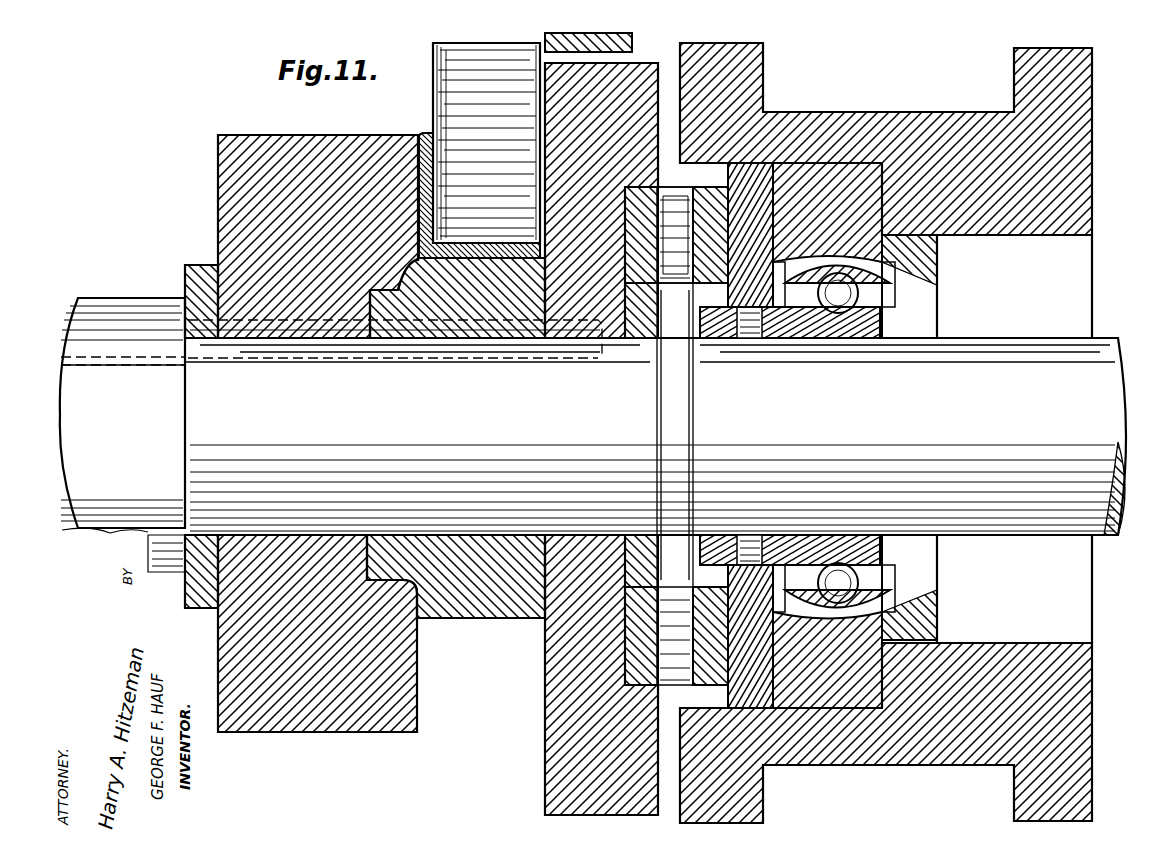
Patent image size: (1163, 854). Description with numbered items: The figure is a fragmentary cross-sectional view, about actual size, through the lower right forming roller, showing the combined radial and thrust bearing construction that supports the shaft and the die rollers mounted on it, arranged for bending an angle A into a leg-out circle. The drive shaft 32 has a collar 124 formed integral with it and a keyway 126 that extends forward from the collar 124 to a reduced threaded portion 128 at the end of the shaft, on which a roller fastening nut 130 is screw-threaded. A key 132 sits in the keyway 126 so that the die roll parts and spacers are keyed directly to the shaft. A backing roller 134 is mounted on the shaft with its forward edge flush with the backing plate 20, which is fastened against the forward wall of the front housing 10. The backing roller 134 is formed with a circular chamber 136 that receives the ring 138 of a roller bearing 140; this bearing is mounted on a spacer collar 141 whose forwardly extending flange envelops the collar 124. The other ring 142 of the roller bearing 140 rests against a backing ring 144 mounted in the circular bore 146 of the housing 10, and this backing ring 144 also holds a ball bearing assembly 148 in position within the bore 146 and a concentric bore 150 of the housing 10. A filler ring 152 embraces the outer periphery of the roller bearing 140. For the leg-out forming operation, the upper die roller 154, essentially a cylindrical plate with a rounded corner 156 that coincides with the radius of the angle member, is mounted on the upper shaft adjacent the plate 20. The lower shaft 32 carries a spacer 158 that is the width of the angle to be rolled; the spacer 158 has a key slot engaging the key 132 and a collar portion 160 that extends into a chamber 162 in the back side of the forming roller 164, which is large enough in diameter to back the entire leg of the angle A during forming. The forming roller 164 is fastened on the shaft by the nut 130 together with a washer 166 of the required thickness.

The front frame or housing 10 is at (1022, 623).
The backing plate 20 is at (545, 41).
The drive shaft 32 is at (1022, 333).
The collar 124 is at (688, 411).
The keyway 126 is at (487, 362).
The reduced threaded portion 128 is at (128, 368).
The roller fastening nut 130 is at (126, 300).
The key 132 is at (318, 350).
The backing roller 134 is at (640, 76).
The circular chamber 136 is at (635, 190).
The ring 138 is at (630, 244).
The roller bearing 140 is at (665, 265).
The spacer collar 141 is at (625, 306).
The other ring 142 is at (828, 230).
The backing ring 144 is at (755, 225).
The circular bore 146 is at (900, 170).
The ball bearing assembly 148 is at (937, 262).
The concentric bore 150 is at (1026, 238).
The filler ring 152 is at (713, 163).
The upper die roller 154 is at (440, 99).
The rounded corner 156 is at (432, 238).
The spacer 158 is at (458, 310).
The collar portion 160 is at (378, 294).
The chamber 162 is at (455, 579).
The forming roller 164 is at (300, 730).
The washer 166 is at (210, 606).
The angle A is at (420, 192).